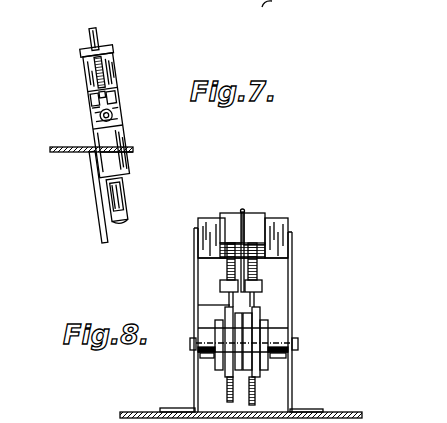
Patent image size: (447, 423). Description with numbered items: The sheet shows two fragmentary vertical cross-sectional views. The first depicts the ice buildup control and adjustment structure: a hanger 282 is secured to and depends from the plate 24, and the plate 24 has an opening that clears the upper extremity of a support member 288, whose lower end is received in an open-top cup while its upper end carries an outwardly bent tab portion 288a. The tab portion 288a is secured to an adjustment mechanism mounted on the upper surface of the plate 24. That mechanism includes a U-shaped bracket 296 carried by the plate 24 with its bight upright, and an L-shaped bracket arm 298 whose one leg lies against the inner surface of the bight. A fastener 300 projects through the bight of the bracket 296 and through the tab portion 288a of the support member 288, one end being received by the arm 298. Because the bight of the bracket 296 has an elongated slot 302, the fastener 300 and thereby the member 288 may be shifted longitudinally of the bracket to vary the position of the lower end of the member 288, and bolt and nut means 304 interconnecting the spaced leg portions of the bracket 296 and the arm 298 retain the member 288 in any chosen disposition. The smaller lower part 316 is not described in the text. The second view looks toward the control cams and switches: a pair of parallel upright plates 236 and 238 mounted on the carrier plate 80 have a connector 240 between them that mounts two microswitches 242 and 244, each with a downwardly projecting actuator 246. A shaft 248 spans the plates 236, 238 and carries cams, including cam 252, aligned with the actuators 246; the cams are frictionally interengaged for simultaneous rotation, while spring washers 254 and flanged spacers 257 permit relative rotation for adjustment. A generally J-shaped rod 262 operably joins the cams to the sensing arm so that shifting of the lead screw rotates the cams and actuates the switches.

In FIG. 7, the bolt and nut means 304 is at (109, 46).
In FIG. 7, the U-shaped bracket 296 is at (113, 53).
In FIG. 7, the elongated slot 302 is at (88, 98).
In FIG. 7, the L-shaped bracket arm 298 is at (122, 104).
In FIG. 7, the fastener 300 is at (123, 118).
In FIG. 7, the plate 24 is at (160, 148).
In FIG. 7, the outwardly bent tab portion 288a is at (142, 164).
In FIG. 7, the hanger 282 is at (92, 188).
In FIG. 7, the rod 316 is at (126, 206).
In FIG. 7, the support member 288 is at (108, 222).
In FIG. 8, the carrier plate 80 is at (130, 412).
In FIG. 8, the upright plate 236 is at (194, 266).
In FIG. 8, the upright plate 238 is at (293, 258).
In FIG. 8, the connector 240 is at (280, 218).
In FIG. 8, the microswitch 242 is at (230, 213).
In FIG. 8, the microswitch 244 is at (257, 213).
In FIG. 8, the actuators 246 is at (257, 267).
In FIG. 8, the spring washers 254 is at (262, 316).
In FIG. 8, the shaft 248 is at (295, 342).
In FIG. 8, the flanged spacers 257 is at (207, 358).
In FIG. 8, the J-shaped rod 262 is at (200, 305).
In FIG. 8, the cam 252 is at (255, 397).